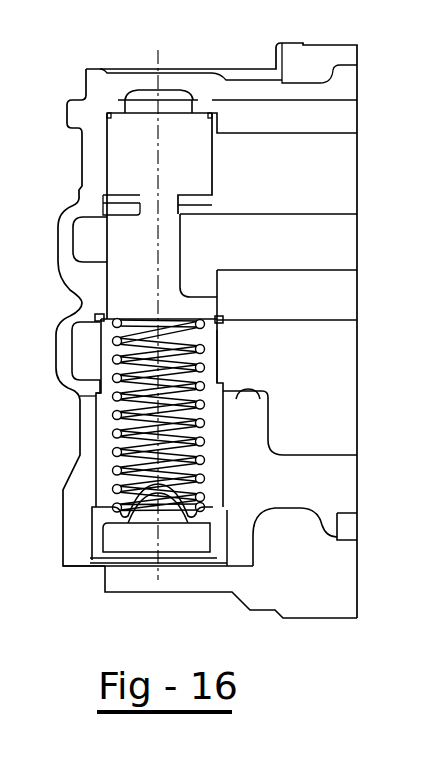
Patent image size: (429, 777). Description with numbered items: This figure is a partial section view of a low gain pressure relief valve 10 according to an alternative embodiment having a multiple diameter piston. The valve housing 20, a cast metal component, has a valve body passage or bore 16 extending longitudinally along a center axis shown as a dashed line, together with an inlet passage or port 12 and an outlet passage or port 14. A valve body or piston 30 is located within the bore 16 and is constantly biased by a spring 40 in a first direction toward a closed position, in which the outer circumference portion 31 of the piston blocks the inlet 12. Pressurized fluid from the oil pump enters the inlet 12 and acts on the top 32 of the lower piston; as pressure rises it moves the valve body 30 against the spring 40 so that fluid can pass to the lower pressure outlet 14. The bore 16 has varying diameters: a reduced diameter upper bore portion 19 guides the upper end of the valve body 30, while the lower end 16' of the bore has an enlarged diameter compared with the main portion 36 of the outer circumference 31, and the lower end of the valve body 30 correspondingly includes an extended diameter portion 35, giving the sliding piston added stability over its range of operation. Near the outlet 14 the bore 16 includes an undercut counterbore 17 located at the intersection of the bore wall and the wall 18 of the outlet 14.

The low gain pressure relief valve 10 is at (62, 152).
The inlet passage or port 12 is at (338, 250).
The outlet passage or port 14 is at (338, 366).
The valve body passage or bore 16 is at (160, 216).
The lower end of the bore 16' is at (231, 553).
The counterbore 17 is at (97, 317).
The wall of the outlet 18 is at (337, 320).
The upper bore portion 19 is at (212, 158).
The valve housing 20 is at (56, 572).
The valve body or piston 30 is at (90, 362).
The outer circumference portion 31 is at (218, 358).
The top of the first piston 32 is at (122, 296).
The extended diameter portion 35 is at (90, 396).
The main portion of the outer circumference 36 is at (100, 369).
The spring 40 is at (108, 474).